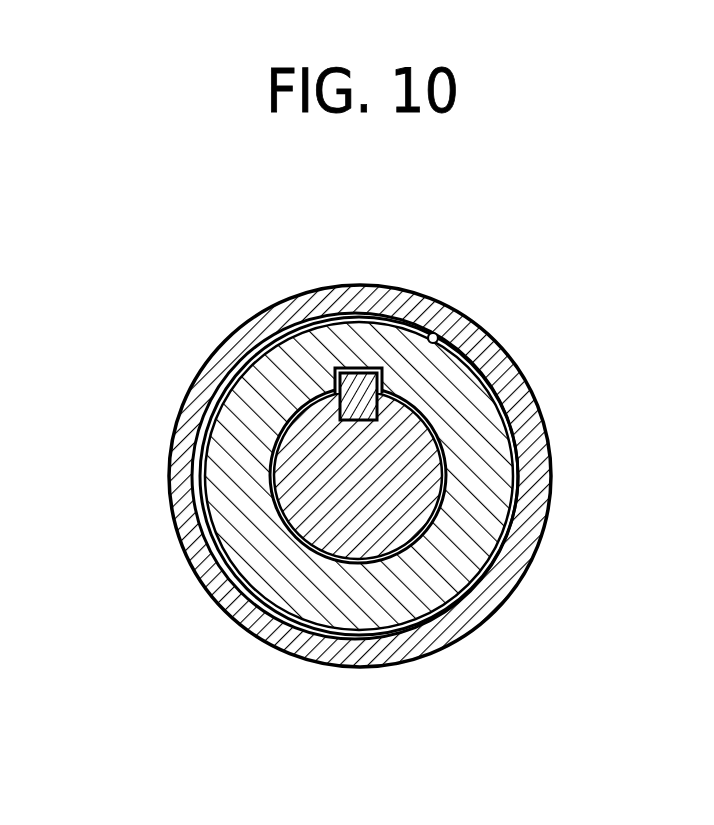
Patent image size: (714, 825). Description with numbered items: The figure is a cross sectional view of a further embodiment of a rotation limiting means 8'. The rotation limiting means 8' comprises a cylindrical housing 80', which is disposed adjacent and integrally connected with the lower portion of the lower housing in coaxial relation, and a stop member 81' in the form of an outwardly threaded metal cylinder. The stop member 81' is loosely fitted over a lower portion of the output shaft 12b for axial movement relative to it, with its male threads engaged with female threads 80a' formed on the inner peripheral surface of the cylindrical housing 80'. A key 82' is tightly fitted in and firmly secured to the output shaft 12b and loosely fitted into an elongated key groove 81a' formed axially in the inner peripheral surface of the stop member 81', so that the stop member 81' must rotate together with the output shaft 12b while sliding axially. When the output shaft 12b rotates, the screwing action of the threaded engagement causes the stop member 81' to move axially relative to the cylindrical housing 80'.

The rotation limiting means 8' is at (117, 325).
The cylindrical housing 80' is at (303, 476).
The female threads 80a' is at (449, 285).
The stop member 81' is at (427, 476).
The keyway 81a' is at (342, 306).
The key 82' is at (471, 387).
The output shaft 12b is at (412, 510).